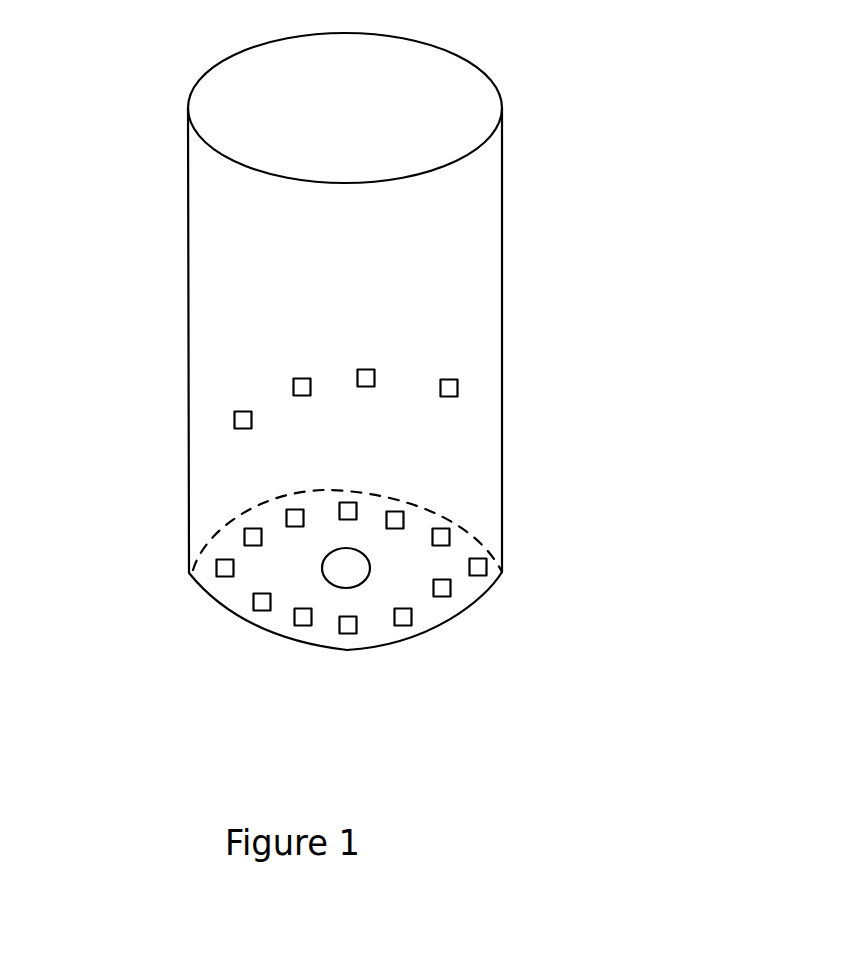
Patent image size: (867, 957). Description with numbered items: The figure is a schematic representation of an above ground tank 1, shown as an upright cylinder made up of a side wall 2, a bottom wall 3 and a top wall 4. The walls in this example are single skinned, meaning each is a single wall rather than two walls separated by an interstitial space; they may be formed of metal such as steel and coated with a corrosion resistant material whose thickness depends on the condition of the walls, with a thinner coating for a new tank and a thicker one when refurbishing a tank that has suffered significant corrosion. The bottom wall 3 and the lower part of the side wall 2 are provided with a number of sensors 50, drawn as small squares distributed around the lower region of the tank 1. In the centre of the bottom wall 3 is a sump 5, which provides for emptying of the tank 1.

The above ground tank 1 is at (575, 407).
The side wall 2 is at (502, 252).
The bottom wall 3 is at (442, 610).
The top wall 4 is at (443, 80).
The sump 5 is at (342, 578).
The sensors 50 is at (300, 396).